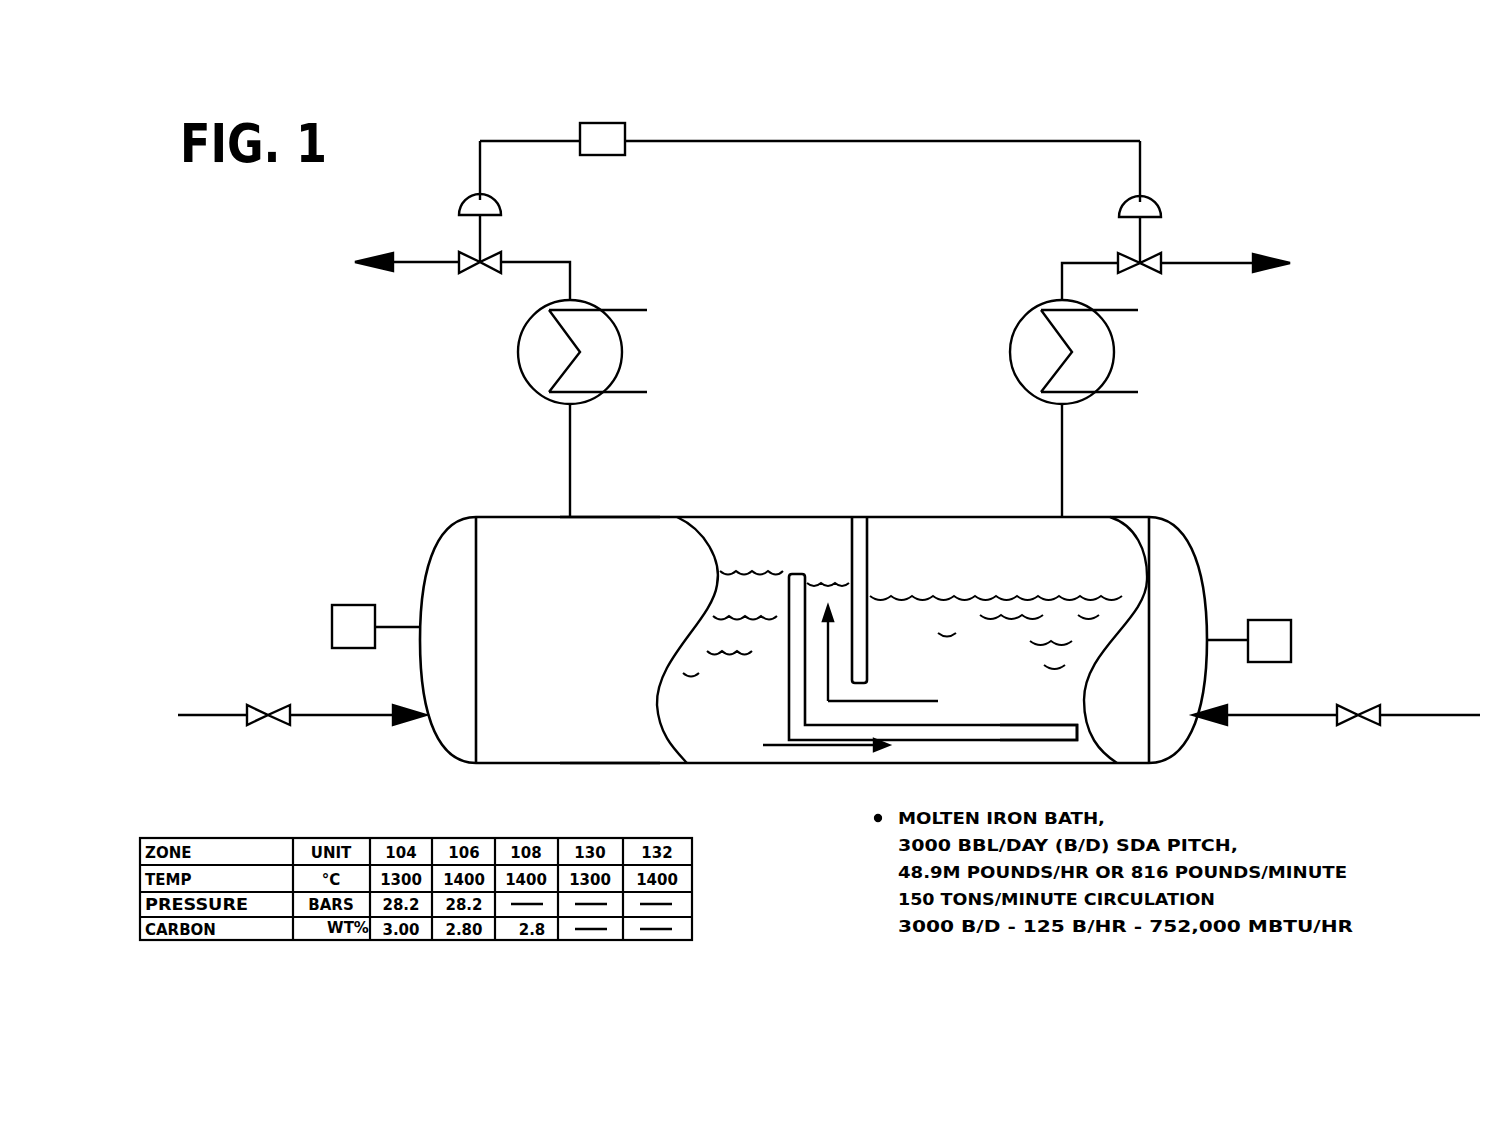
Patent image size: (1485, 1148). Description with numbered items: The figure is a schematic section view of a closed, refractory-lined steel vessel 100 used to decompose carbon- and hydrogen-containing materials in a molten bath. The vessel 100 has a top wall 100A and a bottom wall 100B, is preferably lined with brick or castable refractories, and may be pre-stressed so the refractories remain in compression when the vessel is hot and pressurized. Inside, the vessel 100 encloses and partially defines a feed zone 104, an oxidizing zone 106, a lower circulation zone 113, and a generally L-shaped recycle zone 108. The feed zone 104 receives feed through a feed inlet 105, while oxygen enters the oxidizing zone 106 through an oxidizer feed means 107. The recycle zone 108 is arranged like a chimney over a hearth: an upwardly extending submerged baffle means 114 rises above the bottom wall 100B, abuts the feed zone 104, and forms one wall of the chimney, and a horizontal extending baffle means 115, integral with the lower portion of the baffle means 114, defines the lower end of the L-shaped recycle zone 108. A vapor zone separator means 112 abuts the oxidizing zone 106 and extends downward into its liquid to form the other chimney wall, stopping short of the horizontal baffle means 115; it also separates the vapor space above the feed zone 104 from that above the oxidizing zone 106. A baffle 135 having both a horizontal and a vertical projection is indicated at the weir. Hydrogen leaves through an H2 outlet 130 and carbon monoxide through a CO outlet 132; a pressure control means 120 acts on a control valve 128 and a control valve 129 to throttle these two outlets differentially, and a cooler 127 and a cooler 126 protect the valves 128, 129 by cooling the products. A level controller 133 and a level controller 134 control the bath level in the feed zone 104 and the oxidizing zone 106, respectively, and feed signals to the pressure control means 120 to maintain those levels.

The closed vessel 100 is at (589, 631).
The top wall 100A is at (604, 517).
The bottom wall 100B is at (598, 763).
The feed zone 104 is at (752, 704).
The oxidizing zone 106 is at (1001, 685).
The recycle zone 108 is at (838, 582).
The vapor zone separator means 112 is at (860, 523).
The lower circulation zone 113 is at (736, 761).
The upwardly extending submerged baffle means 114 is at (788, 636).
The horizontal extending baffle means 115 is at (1003, 724).
The baffle 135 is at (800, 598).
The feed inlet 105 is at (276, 713).
The oxidizer feed means 107 is at (1336, 717).
The pressure control means 120 is at (620, 151).
The cooler 126 is at (1018, 343).
The cooler 127 is at (528, 338).
The control valve 128 is at (482, 200).
The control valve 129 is at (1133, 205).
The H2 outlet 130 is at (446, 265).
The CO outlet 132 is at (1176, 264).
The level controller 133 is at (352, 605).
The level controller 134 is at (1265, 620).